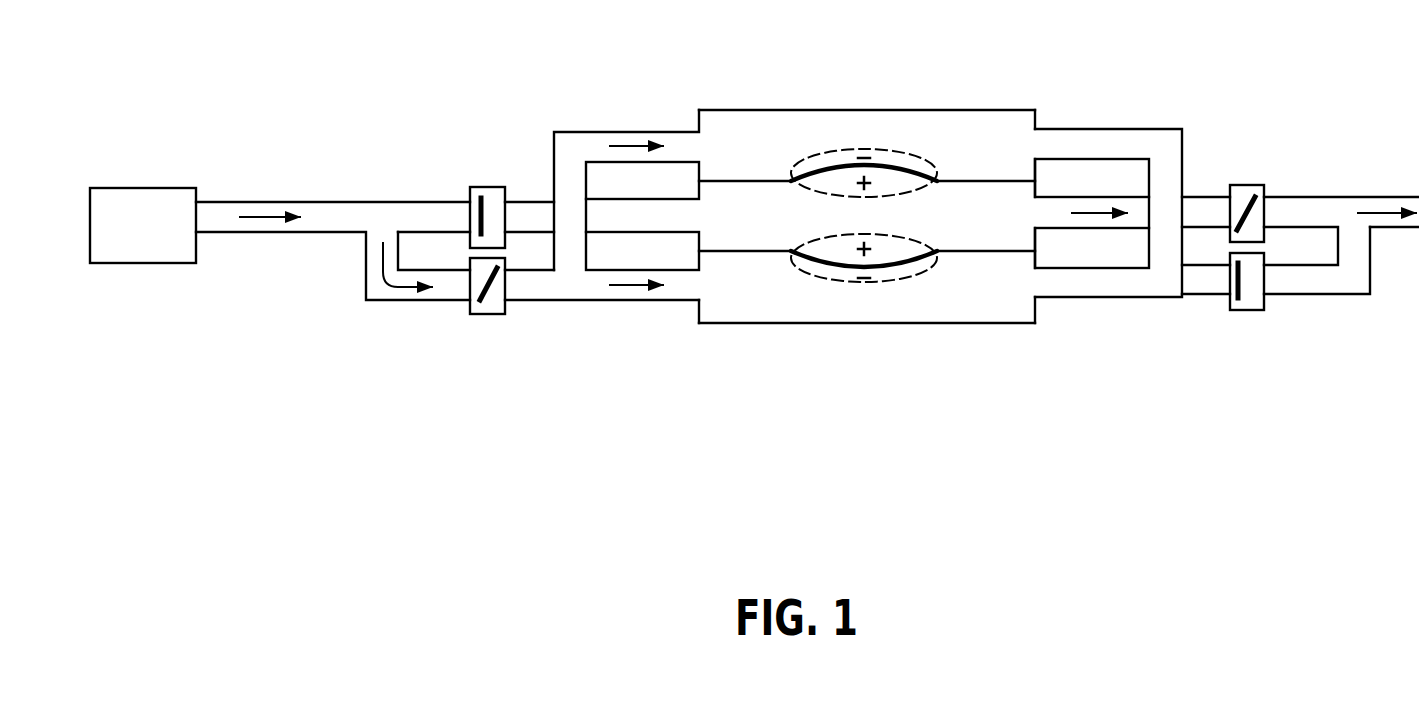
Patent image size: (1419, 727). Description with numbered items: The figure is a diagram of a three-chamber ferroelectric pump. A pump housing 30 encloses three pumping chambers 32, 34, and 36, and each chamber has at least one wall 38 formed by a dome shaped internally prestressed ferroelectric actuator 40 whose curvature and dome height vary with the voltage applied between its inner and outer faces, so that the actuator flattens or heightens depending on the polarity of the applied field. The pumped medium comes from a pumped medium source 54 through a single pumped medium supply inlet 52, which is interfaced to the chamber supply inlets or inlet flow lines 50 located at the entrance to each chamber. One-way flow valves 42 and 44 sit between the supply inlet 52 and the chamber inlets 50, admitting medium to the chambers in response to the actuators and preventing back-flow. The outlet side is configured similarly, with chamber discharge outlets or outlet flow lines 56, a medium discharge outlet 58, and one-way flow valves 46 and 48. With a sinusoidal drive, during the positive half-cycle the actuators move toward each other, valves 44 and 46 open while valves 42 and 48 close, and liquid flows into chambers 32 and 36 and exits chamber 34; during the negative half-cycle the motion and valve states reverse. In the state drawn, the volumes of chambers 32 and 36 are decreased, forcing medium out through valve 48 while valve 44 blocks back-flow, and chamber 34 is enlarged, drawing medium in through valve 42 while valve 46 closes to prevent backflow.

The pump housing 30 is at (850, 233).
The pumping chamber 32 is at (757, 140).
The pumping chamber 34 is at (743, 220).
The pumping chamber 36 is at (762, 288).
The wall 38 is at (983, 180).
The dome shaped internally prestressed ferroelectric actuator 40 is at (903, 167).
The one-way flow valve 42 is at (484, 187).
The one-way flow valve 44 is at (486, 314).
The one-way flow valve 46 is at (1242, 185).
The one-way flow valve 48 is at (1245, 311).
The inlet flow lines 50 is at (532, 200).
The pumped medium supply inlet 52 is at (336, 233).
The pumped medium source 54 is at (157, 205).
The outlet flow lines 56 is at (1073, 128).
The medium discharge outlet 58 is at (1342, 197).